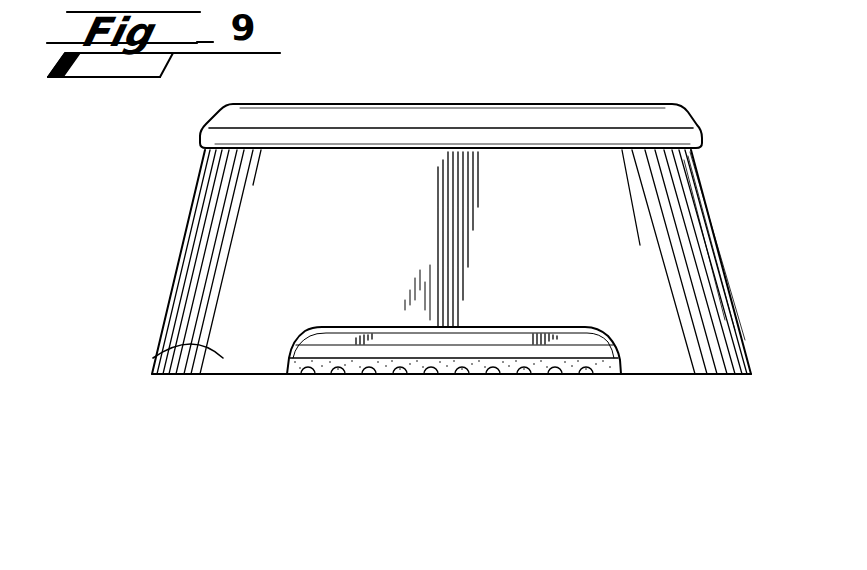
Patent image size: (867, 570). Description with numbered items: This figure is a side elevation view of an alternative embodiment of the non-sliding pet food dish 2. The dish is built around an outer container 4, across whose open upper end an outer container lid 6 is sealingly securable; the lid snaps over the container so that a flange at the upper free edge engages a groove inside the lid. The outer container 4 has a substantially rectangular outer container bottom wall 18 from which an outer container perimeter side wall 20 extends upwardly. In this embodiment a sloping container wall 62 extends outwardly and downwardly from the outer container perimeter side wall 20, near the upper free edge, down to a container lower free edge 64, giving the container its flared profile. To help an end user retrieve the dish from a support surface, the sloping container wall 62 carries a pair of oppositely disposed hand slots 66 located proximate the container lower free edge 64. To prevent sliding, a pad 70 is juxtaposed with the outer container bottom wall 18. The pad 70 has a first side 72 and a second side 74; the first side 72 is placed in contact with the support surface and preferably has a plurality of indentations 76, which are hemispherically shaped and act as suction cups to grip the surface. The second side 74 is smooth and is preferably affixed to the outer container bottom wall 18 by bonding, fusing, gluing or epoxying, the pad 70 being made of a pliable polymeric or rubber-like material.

The non-sliding pet food dish 2 is at (104, 210).
The outer container 4 is at (703, 203).
The outer container lid 6 is at (543, 103).
The outer container bottom wall 18 is at (487, 350).
The outer container perimeter side wall 20 is at (528, 337).
The sloping container wall 62 is at (152, 355).
The container lower free edge 64 is at (665, 374).
The hand slots 66 is at (253, 402).
The pad 70 is at (417, 374).
The first side 72 is at (539, 374).
The second side 74 is at (350, 360).
The indentations 76 is at (370, 374).